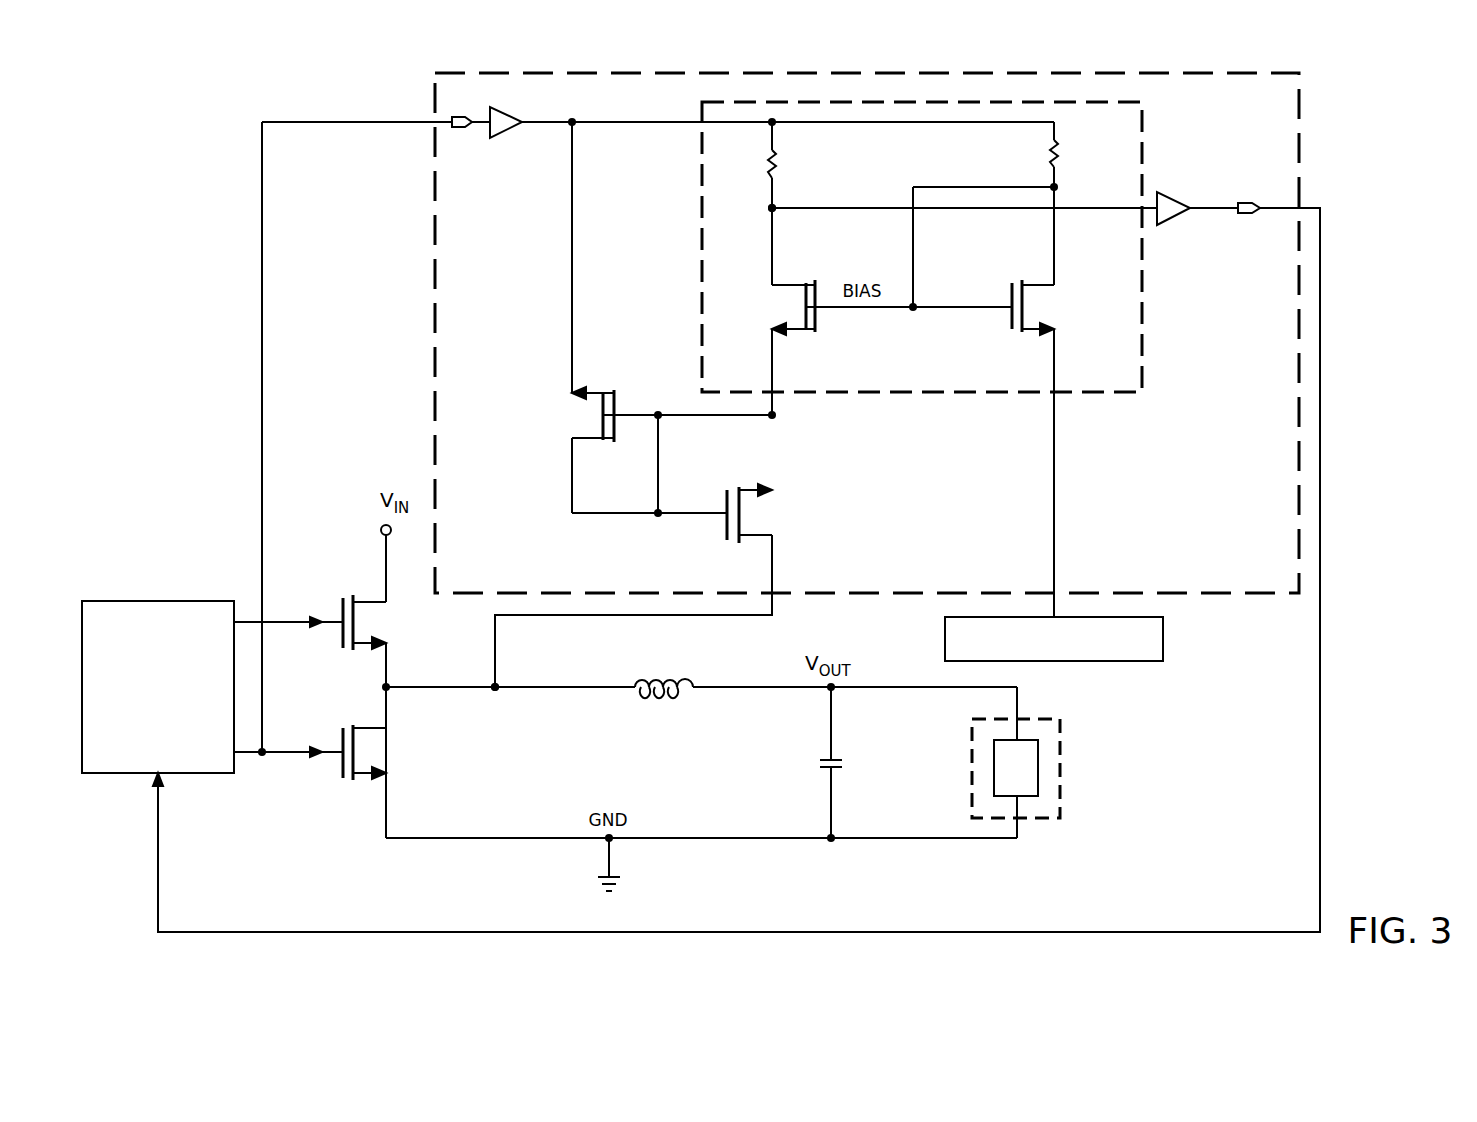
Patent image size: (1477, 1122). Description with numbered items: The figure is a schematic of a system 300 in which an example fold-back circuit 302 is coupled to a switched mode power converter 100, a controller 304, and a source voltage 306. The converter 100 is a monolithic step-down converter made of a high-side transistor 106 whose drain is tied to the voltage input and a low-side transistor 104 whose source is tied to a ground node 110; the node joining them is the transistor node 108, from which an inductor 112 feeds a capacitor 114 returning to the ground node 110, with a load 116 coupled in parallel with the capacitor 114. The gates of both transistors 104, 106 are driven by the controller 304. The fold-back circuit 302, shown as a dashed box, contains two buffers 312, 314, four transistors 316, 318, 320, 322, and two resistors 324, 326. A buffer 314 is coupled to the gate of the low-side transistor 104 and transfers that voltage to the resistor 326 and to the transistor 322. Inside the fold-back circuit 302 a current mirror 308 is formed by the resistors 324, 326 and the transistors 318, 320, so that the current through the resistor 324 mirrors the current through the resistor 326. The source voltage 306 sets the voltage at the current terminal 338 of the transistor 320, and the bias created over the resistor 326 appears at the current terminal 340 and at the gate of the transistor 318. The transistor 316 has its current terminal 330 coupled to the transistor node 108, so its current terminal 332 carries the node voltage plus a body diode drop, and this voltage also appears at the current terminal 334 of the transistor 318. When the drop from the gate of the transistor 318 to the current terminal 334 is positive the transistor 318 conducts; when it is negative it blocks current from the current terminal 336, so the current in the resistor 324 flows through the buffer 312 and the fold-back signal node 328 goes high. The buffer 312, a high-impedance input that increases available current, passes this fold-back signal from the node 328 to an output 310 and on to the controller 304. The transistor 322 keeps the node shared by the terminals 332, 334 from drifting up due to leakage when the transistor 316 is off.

The switched mode power converter 100 is at (1158, 769).
The low-side transistor 104 is at (338, 766).
The high-side transistor 106 is at (338, 612).
The transistor node 108 is at (500, 684).
The ground node 110 is at (622, 880).
The inductor 112 is at (664, 676).
The capacitor 114 is at (845, 765).
The load 116 is at (1062, 781).
The system 300 is at (157, 112).
The fold-back circuit 302 is at (1305, 124).
The controller 304 is at (150, 600).
The source voltage 306 is at (1165, 640).
The current mirror 308 is at (1150, 124).
The output terminal 310 is at (1247, 202).
The buffer 312 is at (1172, 196).
The buffer 314 is at (512, 130).
The transistor 316 is at (723, 527).
The transistor 318 is at (819, 323).
The transistor 320 is at (1008, 300).
The transistor 322 is at (620, 402).
The resistor 324 is at (780, 166).
The resistor 326 is at (1062, 156).
The fold-back signal node 328 is at (769, 205).
The current terminal 330 is at (745, 546).
The current terminal 332 is at (746, 488).
The current terminal 334 is at (791, 334).
The current terminal 336 is at (800, 283).
The current terminal 338 is at (1029, 334).
The current terminal 340 is at (1027, 284).